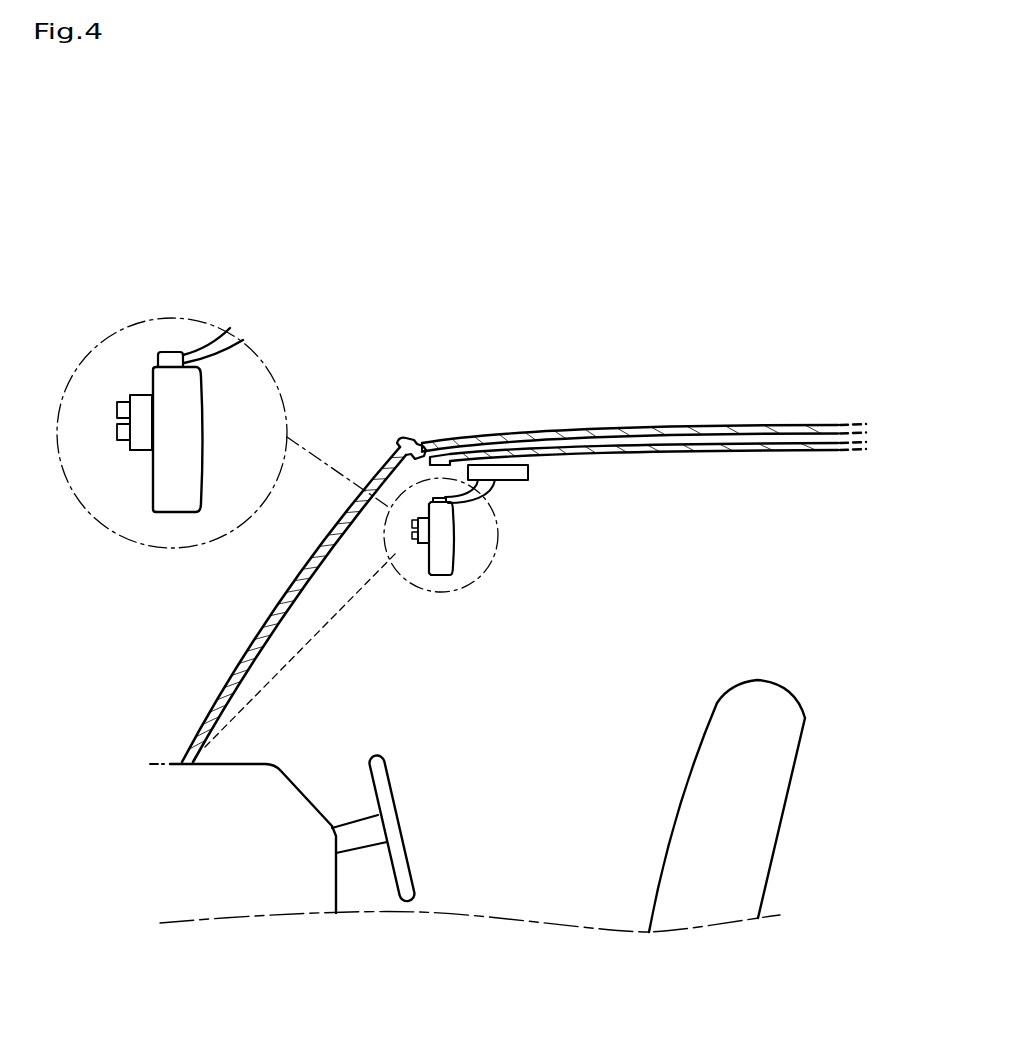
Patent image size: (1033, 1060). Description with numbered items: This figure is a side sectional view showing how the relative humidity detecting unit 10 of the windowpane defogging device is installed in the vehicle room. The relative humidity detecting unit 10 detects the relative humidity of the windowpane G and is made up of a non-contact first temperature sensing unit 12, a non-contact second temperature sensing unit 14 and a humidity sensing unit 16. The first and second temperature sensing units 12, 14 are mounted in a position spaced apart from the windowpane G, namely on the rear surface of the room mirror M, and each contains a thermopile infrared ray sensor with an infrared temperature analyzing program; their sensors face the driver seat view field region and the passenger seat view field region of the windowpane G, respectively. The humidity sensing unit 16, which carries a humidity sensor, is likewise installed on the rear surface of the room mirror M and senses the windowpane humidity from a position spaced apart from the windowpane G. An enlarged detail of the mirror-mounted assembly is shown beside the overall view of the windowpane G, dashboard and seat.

The relative humidity detecting unit 10 is at (138, 397).
The first temperature sensing unit 12 is at (124, 402).
The second temperature sensing unit 14 is at (278, 417).
The humidity sensing unit 16 is at (128, 447).
The room mirror M is at (183, 408).
The windowpane G is at (268, 626).